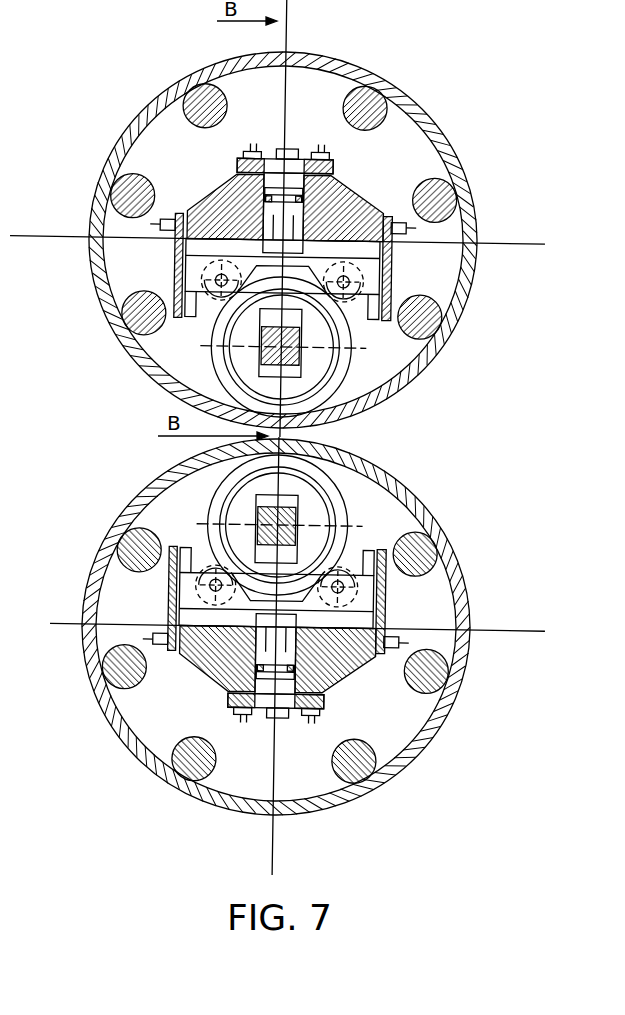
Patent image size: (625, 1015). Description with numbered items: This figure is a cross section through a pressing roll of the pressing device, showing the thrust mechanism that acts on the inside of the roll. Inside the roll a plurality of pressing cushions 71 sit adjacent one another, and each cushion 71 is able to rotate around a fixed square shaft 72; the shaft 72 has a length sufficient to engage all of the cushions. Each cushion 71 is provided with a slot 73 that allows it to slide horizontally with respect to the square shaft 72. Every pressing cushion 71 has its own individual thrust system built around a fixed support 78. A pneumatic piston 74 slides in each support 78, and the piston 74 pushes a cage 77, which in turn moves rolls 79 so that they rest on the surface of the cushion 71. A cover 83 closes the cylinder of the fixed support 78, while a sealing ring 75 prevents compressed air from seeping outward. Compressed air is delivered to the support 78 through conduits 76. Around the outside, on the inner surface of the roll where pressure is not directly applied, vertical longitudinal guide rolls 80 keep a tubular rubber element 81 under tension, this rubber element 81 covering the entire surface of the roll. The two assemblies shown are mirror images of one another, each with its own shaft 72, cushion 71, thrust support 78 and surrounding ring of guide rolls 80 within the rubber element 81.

The pressing cushion 71 is at (313, 377).
The square shaft 72 is at (303, 355).
The slot 73 is at (261, 312).
The pneumatic piston 74 is at (253, 205).
The sealing ring 75 is at (350, 195).
The conduit 76 is at (290, 148).
The cage 77 is at (188, 258).
The fixed support 78 is at (395, 243).
The roll 79 is at (219, 280).
The vertical longitudinal guide roll 80 is at (380, 95).
The tubular rubber element 81 is at (437, 128).
The cover 83 is at (332, 168).